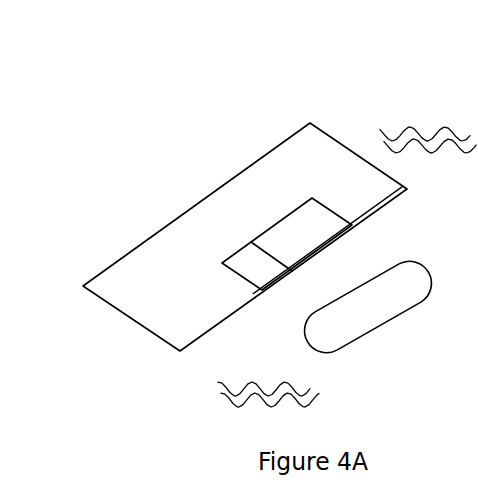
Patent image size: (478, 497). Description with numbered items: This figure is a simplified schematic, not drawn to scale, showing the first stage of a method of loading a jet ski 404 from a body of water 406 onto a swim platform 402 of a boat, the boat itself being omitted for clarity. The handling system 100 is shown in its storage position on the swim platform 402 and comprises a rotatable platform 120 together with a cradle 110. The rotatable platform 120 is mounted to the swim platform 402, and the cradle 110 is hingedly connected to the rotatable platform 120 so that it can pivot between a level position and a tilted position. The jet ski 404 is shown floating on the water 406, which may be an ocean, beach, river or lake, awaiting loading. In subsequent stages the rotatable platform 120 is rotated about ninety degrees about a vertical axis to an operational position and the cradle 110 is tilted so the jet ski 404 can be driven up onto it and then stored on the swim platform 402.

The swim platform 402 is at (264, 137).
The handling system 100 is at (254, 223).
The cradle 110 is at (313, 241).
The rotatable platform 120 is at (266, 275).
The jet ski 404 is at (395, 330).
The water 406 is at (203, 386).